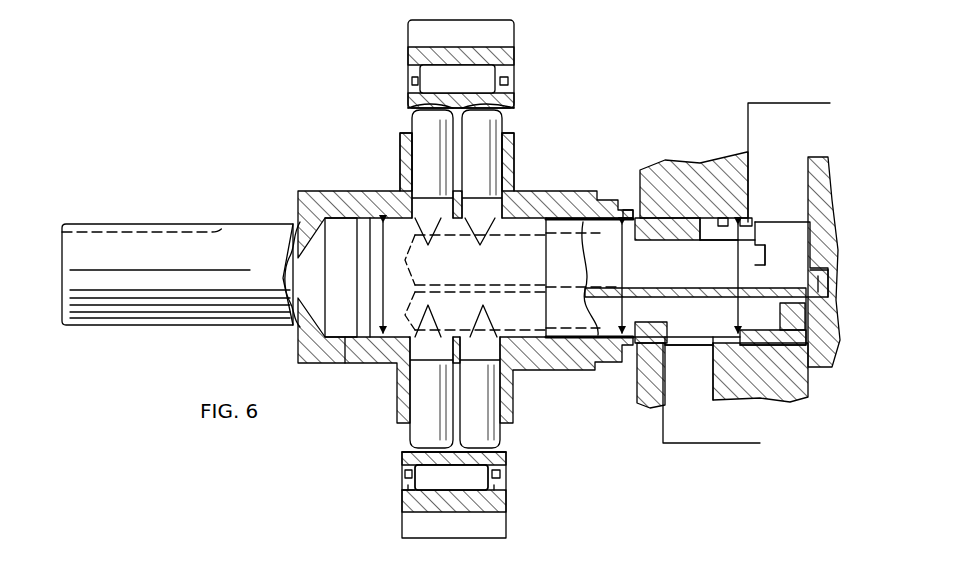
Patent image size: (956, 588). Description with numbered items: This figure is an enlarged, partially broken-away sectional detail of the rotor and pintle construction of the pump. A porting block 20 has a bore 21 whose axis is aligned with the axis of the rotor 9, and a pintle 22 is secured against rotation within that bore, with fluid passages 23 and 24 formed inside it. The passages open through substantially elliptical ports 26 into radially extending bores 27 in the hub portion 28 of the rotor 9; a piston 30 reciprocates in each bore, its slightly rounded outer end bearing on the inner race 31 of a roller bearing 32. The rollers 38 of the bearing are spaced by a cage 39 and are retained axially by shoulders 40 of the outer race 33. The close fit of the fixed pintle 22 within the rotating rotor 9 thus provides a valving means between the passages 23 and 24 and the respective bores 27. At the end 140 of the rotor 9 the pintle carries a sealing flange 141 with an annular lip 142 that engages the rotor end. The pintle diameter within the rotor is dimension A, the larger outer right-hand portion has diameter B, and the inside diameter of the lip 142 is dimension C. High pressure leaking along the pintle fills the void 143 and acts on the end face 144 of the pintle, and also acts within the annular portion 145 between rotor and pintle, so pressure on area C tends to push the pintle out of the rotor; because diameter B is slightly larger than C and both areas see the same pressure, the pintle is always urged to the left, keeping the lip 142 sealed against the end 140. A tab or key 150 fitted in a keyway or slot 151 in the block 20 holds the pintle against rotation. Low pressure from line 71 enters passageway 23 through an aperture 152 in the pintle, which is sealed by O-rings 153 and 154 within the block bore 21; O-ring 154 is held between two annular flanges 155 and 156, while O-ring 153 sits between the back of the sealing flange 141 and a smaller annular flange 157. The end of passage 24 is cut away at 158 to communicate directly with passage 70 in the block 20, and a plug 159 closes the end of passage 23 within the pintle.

The rotor 9 is at (340, 197).
The porting block 20 is at (683, 168).
The bore 21 is at (712, 228).
The pintle 22 is at (386, 362).
The fluid passage 23 is at (686, 316).
The fluid passage 24 is at (695, 279).
The elliptical openings 26 is at (432, 238).
The radially extending bores 27 is at (430, 205).
The hub portion 28 is at (505, 160).
The piston 30 is at (495, 440).
The inner race 31 is at (507, 458).
The roller bearing 32 is at (508, 503).
The outer race 33 is at (410, 497).
The rollers 38 is at (440, 488).
The cage 39 is at (408, 472).
The shoulders 40 is at (408, 488).
The passage 70 is at (777, 113).
The line 71 is at (745, 445).
The end of the rotor 140 is at (634, 358).
The sealing flange 141 is at (660, 222).
The annular lip 142 is at (628, 210).
The void 143 is at (338, 368).
The end face 144 is at (350, 262).
The annular portion 145 is at (580, 215).
The tab or key 150 is at (818, 272).
The keyway or slot 151 is at (832, 292).
The aperture 152 is at (690, 347).
The O-ring 153 is at (665, 335).
The O-ring 154 is at (722, 347).
The annular flange 155 is at (722, 219).
The annular flange 156 is at (748, 222).
The annular flange 157 is at (668, 232).
The cut-away 158 is at (782, 251).
The plug 159 is at (785, 308).
The dimension A is at (378, 277).
The dimension B is at (736, 278).
The dimension C is at (621, 278).